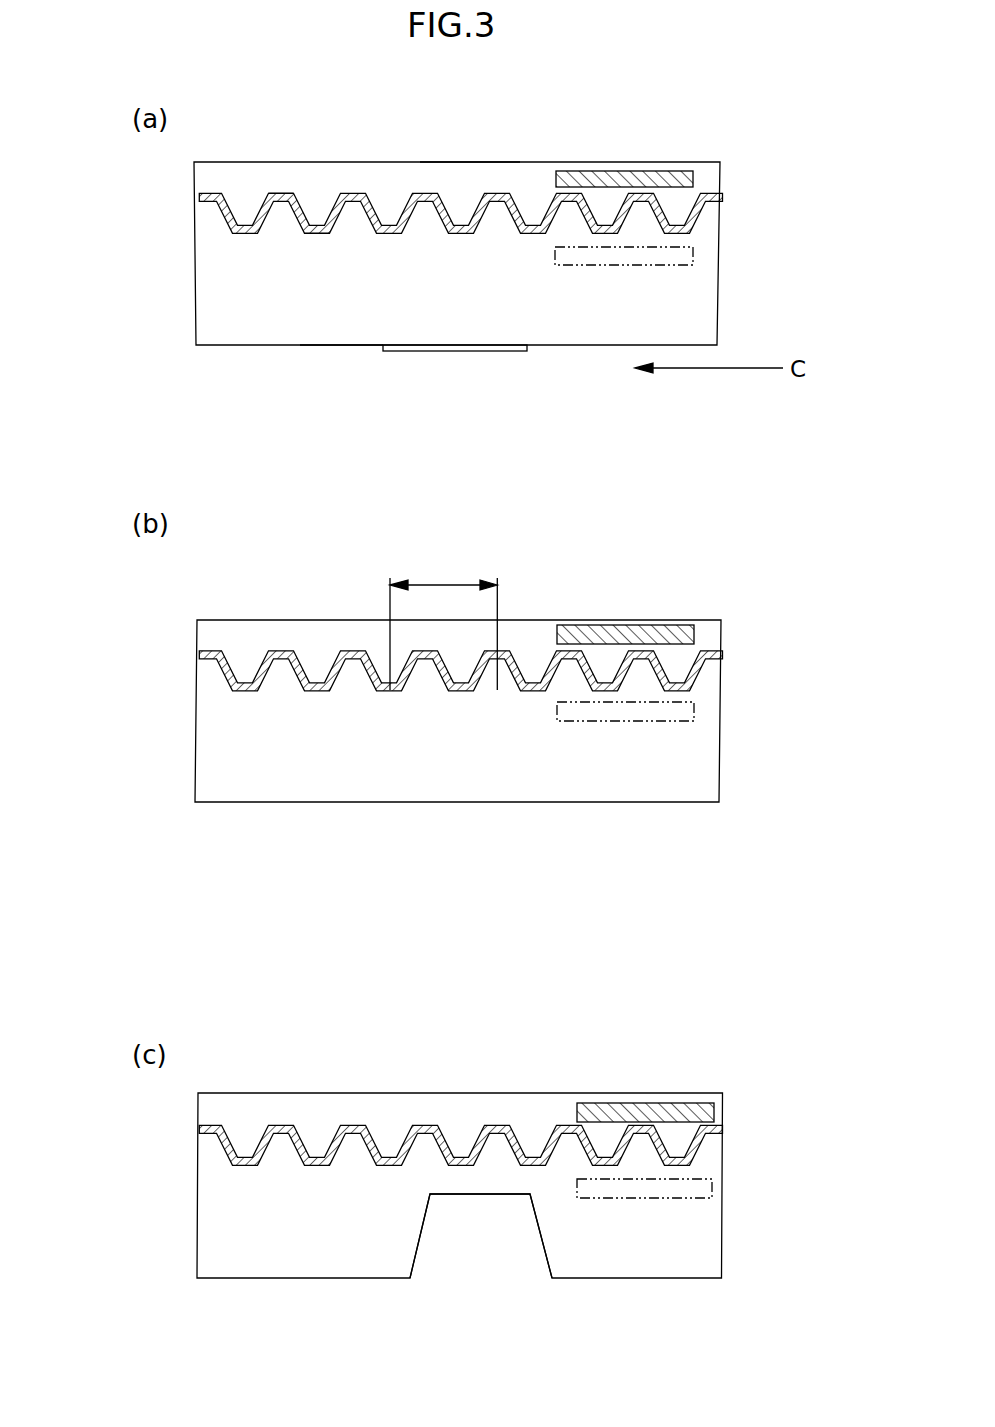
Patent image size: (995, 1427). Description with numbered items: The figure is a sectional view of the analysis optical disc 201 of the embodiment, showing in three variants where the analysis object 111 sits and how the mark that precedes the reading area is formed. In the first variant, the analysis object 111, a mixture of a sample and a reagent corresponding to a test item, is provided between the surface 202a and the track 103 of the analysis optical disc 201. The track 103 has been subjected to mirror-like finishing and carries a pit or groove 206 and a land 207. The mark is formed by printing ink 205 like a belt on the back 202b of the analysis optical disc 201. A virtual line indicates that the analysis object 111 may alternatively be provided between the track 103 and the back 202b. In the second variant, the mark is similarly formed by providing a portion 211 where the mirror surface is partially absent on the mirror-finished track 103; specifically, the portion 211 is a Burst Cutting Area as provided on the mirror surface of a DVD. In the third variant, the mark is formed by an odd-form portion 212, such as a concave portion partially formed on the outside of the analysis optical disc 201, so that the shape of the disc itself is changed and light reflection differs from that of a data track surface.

The analysis optical disc 201 is at (312, 346).
The surface 202a is at (467, 162).
The back 202b is at (345, 345).
The track 103 is at (722, 193).
The analysis object 111 is at (615, 171).
The ink 205 is at (460, 351).
The pit or groove 206 is at (313, 235).
The land 207 is at (279, 207).
The portion where a mirror surface is partially absent 211 is at (443, 585).
The odd-form portion 212 is at (542, 1232).